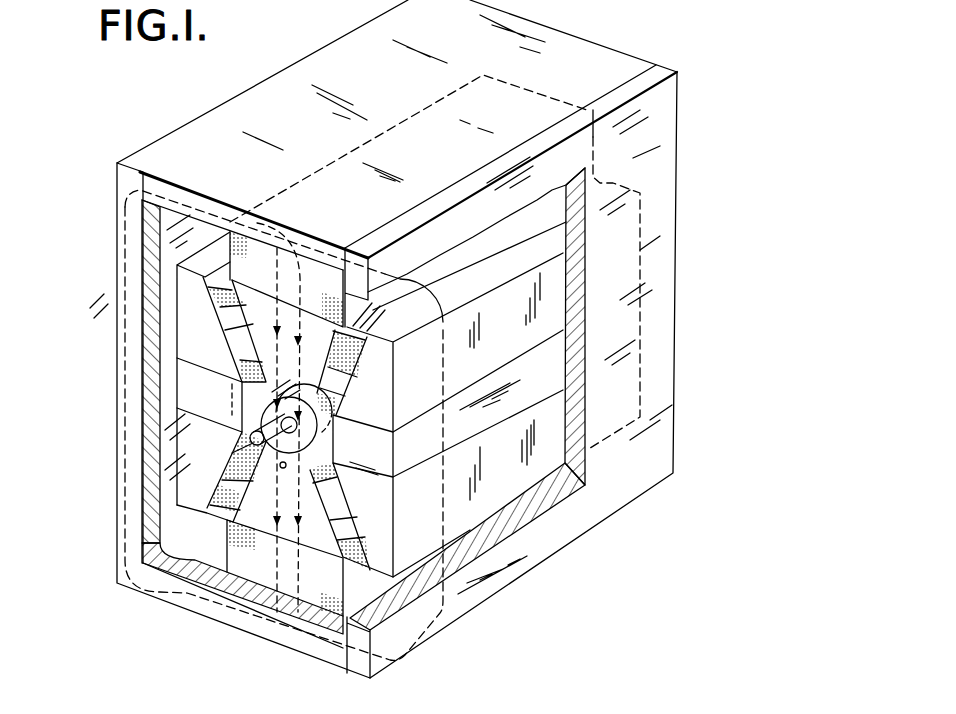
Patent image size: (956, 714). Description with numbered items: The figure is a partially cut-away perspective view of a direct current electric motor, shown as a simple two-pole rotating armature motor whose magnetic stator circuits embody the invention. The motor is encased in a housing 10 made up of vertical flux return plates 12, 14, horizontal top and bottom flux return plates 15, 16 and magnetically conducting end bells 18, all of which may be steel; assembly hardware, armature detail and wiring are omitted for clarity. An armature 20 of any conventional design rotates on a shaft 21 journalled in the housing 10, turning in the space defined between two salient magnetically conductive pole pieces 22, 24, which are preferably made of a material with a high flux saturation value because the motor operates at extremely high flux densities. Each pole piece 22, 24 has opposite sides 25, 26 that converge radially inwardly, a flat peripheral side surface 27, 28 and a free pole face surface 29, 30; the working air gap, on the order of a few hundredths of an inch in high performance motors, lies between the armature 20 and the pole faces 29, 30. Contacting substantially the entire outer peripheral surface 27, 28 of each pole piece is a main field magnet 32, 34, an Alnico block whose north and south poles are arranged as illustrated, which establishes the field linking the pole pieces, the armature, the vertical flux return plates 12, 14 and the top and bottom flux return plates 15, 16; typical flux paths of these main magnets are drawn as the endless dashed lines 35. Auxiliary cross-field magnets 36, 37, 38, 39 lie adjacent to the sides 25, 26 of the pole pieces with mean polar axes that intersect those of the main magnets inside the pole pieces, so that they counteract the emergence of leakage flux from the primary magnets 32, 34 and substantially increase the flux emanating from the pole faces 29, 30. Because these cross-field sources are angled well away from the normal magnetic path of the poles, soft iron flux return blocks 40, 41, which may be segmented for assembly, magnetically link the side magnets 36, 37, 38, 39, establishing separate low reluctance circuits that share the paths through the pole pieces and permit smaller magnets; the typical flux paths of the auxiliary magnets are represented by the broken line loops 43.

The housing 10 is at (110, 371).
The vertical flux return plate 12 is at (117, 264).
The vertical flux return plate 14 is at (525, 563).
The horizontal flux return plate 15 is at (217, 613).
The horizontal flux return plate 16 is at (213, 210).
The magnetically conducting end bell 18 is at (152, 507).
The armature 20 is at (313, 430).
The shaft 21 is at (250, 440).
The pole piece 22 is at (228, 331).
The pole piece 24 is at (253, 483).
The side of pole piece 25 is at (222, 309).
The side of pole piece 26 is at (227, 493).
The flat peripheral side surface 27 is at (248, 292).
The flat peripheral side surface 28 is at (253, 533).
The pole face surface 29 is at (243, 399).
The pole face surface 30 is at (280, 470).
The main field magnet 32 is at (322, 275).
The main field magnet 34 is at (320, 600).
The magnetic flux path 35 is at (183, 595).
The auxiliary cross-field magnet 36 is at (350, 364).
The auxiliary cross-field magnet 37 is at (238, 349).
The auxiliary cross-field magnet 38 is at (337, 493).
The auxiliary cross-field magnet 39 is at (220, 511).
The flux return block 40 is at (200, 380).
The flux return block 41 is at (372, 452).
The broken line loop 43 is at (350, 437).